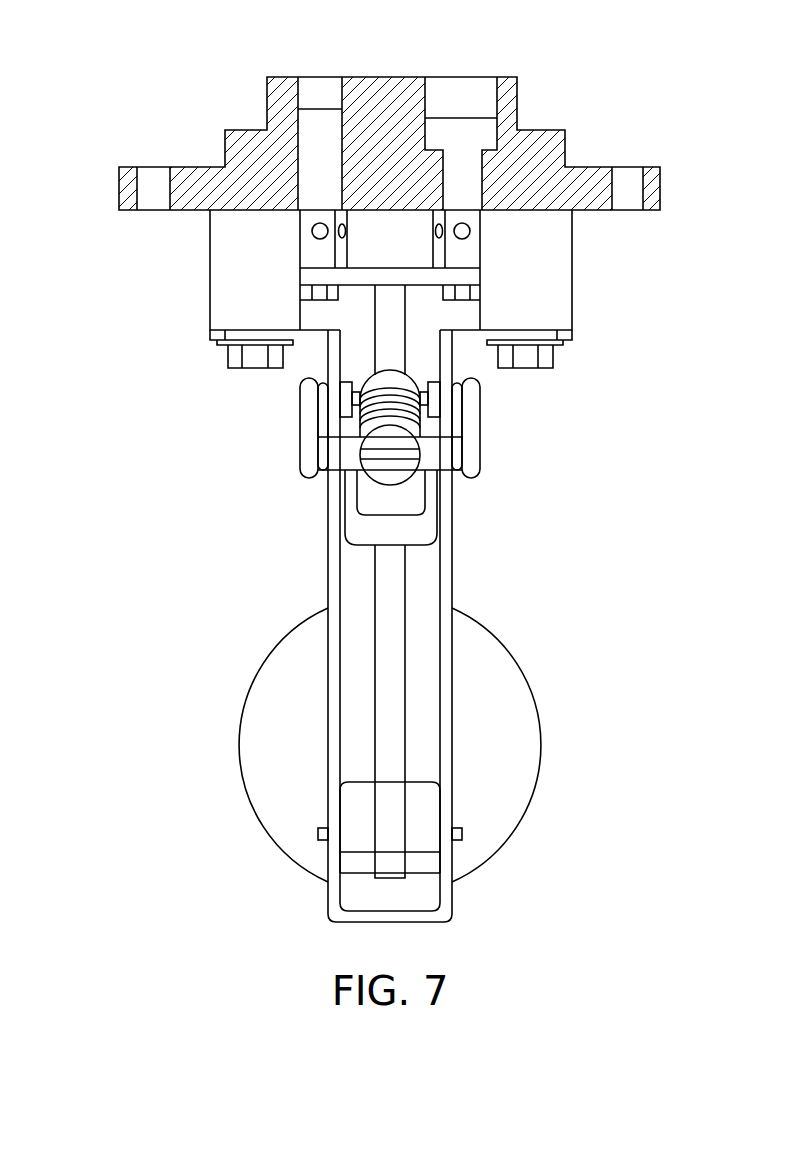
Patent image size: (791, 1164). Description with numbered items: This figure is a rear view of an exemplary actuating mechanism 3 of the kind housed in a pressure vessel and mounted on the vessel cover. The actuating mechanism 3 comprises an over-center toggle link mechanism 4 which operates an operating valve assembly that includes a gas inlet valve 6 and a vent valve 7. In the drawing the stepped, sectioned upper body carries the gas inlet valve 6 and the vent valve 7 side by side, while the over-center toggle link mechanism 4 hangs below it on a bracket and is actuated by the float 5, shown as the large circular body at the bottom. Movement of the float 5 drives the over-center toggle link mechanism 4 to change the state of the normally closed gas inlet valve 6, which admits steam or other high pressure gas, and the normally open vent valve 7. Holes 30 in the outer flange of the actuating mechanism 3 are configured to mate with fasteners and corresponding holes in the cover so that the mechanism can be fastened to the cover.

The actuating mechanism 3 is at (85, 80).
The over-center toggle link mechanism 4 is at (528, 454).
The float 5 is at (536, 710).
The gas inlet valve 6 is at (322, 88).
The vent valve 7 is at (466, 88).
The holes 30 is at (148, 200).